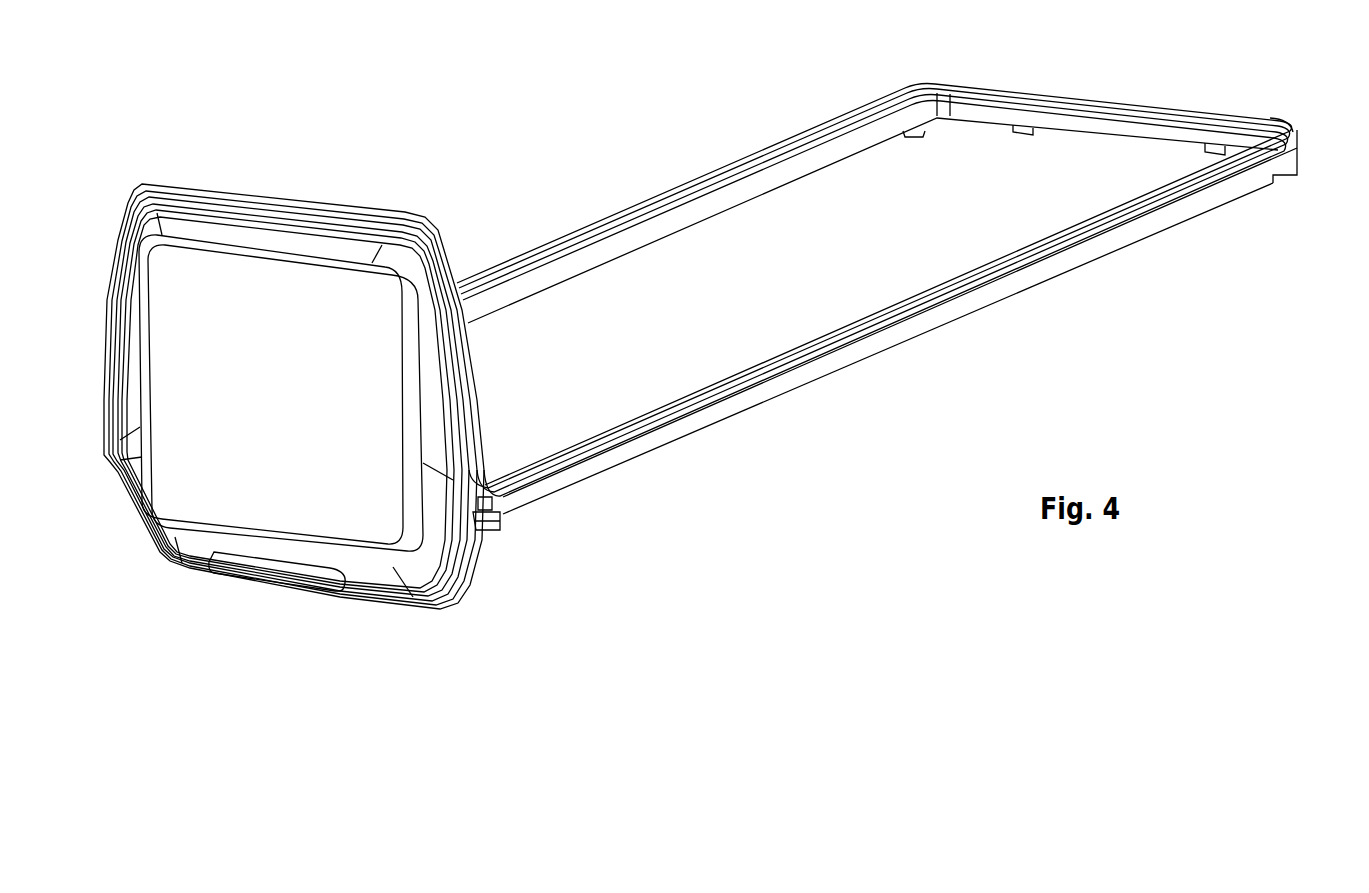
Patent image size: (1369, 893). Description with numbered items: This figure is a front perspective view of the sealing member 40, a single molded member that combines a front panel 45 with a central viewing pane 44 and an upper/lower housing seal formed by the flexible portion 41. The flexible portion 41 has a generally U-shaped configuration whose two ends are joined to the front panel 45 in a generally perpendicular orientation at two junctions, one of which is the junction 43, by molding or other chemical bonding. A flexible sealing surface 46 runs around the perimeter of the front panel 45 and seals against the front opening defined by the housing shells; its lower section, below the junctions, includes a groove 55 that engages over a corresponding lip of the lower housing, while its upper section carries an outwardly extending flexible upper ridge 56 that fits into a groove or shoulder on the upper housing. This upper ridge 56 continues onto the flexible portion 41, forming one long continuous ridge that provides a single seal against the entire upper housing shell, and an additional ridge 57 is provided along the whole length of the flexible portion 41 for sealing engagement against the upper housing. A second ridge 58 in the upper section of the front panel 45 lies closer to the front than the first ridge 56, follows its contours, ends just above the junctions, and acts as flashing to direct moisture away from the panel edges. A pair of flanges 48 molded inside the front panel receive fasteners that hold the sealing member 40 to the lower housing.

The sealing member 40 is at (520, 107).
The flexible portion 41 is at (727, 197).
The junction 43 is at (488, 492).
The viewing pane 44 is at (180, 337).
The front panel 45 is at (203, 555).
The flexible sealing surface 46 is at (330, 212).
The flange 48 is at (487, 535).
The groove 55 is at (447, 602).
The upper ridge 56 is at (135, 184).
The additional ridge 57 is at (1281, 124).
The second ridge 58 is at (492, 503).